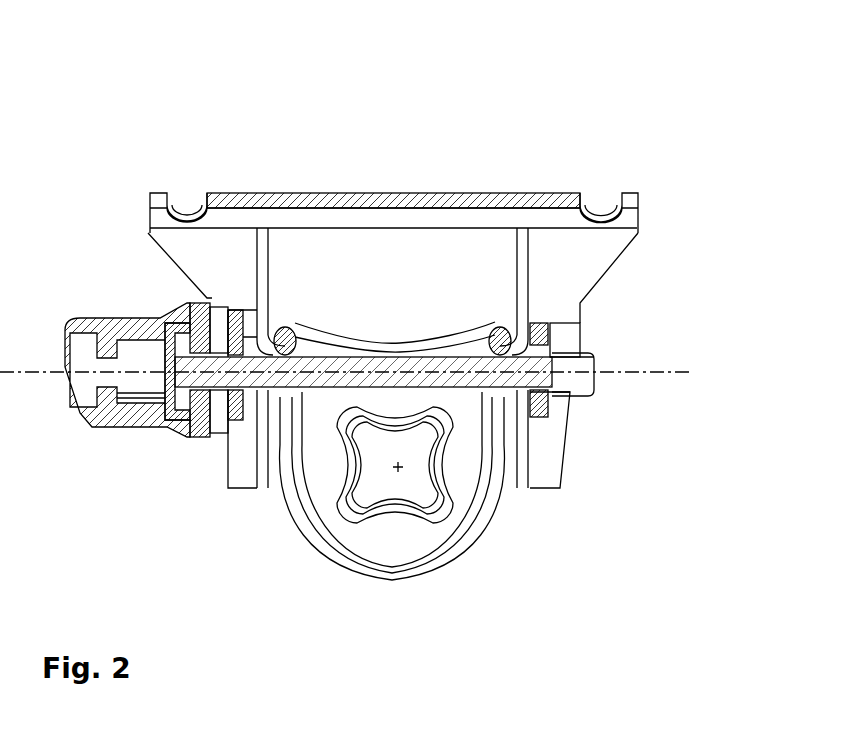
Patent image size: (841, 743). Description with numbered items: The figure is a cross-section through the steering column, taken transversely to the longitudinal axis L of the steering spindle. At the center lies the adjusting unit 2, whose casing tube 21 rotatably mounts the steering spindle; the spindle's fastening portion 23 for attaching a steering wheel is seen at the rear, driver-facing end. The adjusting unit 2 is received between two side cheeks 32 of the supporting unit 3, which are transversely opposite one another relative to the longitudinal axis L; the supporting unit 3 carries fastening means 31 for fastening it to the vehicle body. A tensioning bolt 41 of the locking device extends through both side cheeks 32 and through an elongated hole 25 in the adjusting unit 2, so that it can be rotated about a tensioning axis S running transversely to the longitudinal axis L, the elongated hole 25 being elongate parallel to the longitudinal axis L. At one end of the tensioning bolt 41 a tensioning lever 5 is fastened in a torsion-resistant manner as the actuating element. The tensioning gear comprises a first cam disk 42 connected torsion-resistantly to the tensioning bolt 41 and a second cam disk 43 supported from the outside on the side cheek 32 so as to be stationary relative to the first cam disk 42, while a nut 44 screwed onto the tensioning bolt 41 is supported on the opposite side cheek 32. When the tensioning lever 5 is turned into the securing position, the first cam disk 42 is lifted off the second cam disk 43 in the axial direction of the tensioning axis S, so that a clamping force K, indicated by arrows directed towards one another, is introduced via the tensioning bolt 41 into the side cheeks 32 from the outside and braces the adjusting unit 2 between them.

The adjusting unit 2 is at (413, 580).
The casing tube 21 is at (353, 567).
The fastening portion 23 is at (428, 517).
The supporting unit 3 is at (455, 205).
The fastening means 31 is at (186, 208).
The side cheeks 32 is at (276, 432).
The tensioning bolt 41 is at (355, 368).
The elongated hole 25 is at (293, 328).
The first cam disk 42 is at (220, 428).
The second cam disk 43 is at (250, 430).
The nut 44 is at (566, 398).
The tensioning lever 5 is at (115, 335).
The clamping force K is at (285, 315).
The tensioning axis S is at (648, 371).
The longitudinal axis L is at (400, 470).